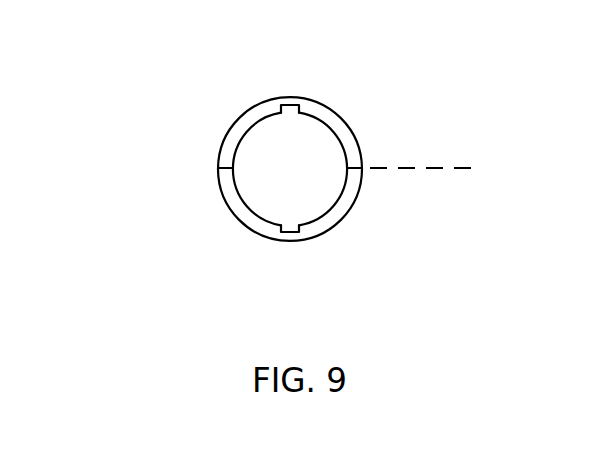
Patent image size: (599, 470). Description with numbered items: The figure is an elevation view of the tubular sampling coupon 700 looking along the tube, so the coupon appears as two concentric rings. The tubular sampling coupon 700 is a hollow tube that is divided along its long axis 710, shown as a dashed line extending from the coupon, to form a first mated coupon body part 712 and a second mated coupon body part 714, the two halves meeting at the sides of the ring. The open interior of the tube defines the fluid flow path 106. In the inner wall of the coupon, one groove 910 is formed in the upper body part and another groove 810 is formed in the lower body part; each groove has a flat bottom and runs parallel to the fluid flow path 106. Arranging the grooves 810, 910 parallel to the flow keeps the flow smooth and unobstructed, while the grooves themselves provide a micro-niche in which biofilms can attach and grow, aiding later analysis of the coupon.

The tubular sampling coupon 700 is at (180, 105).
The first mated coupon body part 712 is at (343, 118).
The second mated coupon body part 714 is at (337, 223).
The fluid flow path 106 is at (255, 188).
The groove 910 is at (290, 105).
The groove 810 is at (288, 232).
The long axis 710 is at (437, 170).